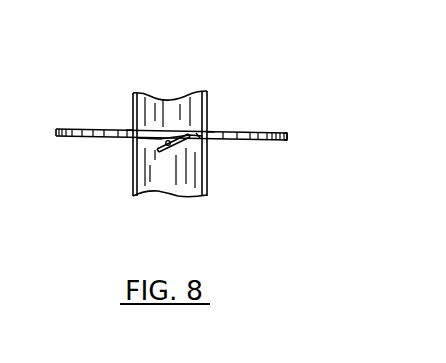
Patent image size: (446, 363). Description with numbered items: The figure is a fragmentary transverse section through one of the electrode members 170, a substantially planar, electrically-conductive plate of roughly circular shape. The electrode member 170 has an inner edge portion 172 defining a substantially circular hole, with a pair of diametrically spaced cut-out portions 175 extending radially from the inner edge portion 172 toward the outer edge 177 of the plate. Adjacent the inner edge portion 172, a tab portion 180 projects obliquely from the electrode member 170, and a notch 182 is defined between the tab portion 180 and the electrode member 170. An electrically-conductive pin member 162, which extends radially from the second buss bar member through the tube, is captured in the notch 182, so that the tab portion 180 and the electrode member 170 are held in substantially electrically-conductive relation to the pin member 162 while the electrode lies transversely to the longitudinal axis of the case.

The pin member 162 is at (180, 141).
The electrode member 170 is at (257, 141).
The inner edge portion 172 is at (211, 136).
The cut-out portions 175 is at (126, 129).
The outer edge 177 is at (287, 135).
The tab portion 180 is at (183, 141).
The notch 182 is at (156, 144).